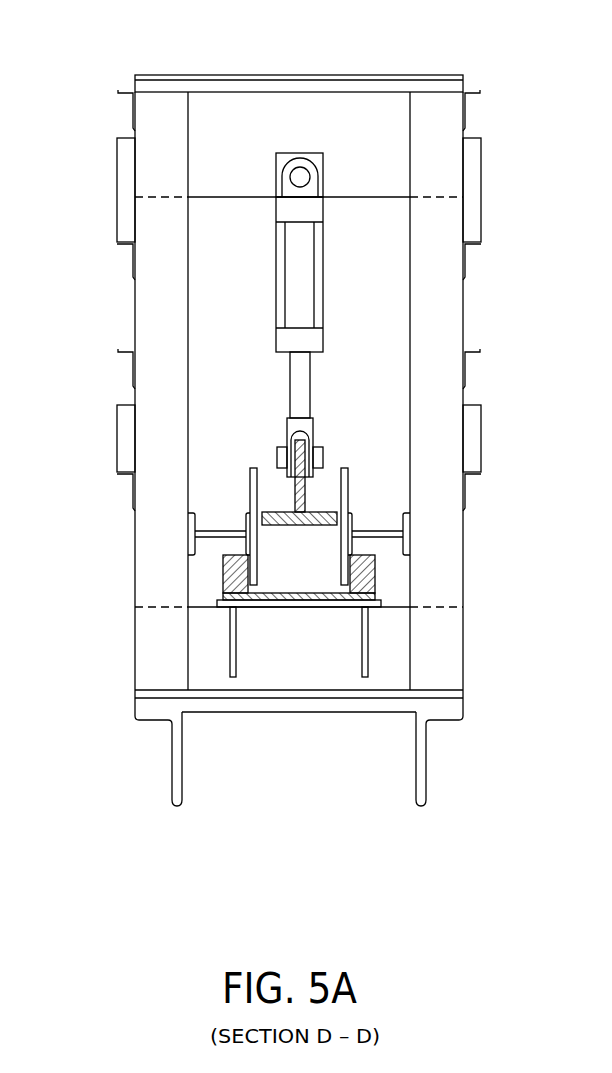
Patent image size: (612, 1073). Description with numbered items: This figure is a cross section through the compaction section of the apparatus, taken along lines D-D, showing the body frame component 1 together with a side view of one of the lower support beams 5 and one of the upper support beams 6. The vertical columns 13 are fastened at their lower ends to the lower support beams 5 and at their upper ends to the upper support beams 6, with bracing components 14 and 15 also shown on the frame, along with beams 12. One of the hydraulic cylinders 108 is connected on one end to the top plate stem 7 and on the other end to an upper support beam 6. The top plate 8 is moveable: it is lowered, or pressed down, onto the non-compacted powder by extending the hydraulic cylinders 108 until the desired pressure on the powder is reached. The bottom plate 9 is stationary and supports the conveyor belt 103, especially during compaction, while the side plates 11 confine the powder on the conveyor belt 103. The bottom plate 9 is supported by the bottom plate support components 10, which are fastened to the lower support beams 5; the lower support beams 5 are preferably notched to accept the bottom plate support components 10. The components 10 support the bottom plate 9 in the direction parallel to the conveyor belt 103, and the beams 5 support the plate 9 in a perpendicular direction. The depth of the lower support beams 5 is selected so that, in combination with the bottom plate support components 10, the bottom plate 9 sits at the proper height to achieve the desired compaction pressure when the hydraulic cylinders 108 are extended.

The body frame component 1 is at (172, 783).
The lower support beam 5 is at (307, 712).
The upper support beam 6 is at (321, 73).
The top plate stem 7 is at (304, 502).
The top plate 8 is at (292, 527).
The bottom plate 9 is at (318, 607).
The bottom plate support component 10 is at (236, 643).
The side plate 11 is at (250, 476).
The beam 12 is at (227, 530).
The vertical column 13 is at (135, 303).
The bracing component 14 is at (118, 93).
The bracing component 15 is at (117, 190).
The conveyor belt 103 is at (290, 590).
The hydraulic cylinder 108 is at (276, 311).